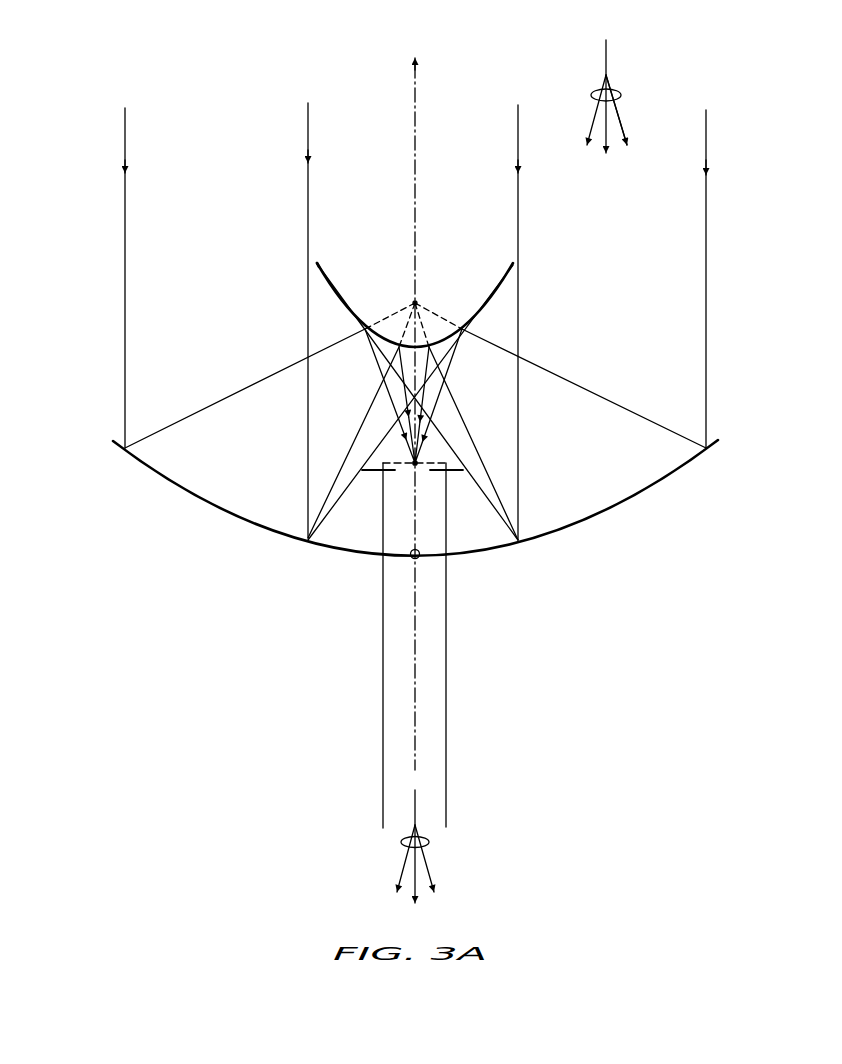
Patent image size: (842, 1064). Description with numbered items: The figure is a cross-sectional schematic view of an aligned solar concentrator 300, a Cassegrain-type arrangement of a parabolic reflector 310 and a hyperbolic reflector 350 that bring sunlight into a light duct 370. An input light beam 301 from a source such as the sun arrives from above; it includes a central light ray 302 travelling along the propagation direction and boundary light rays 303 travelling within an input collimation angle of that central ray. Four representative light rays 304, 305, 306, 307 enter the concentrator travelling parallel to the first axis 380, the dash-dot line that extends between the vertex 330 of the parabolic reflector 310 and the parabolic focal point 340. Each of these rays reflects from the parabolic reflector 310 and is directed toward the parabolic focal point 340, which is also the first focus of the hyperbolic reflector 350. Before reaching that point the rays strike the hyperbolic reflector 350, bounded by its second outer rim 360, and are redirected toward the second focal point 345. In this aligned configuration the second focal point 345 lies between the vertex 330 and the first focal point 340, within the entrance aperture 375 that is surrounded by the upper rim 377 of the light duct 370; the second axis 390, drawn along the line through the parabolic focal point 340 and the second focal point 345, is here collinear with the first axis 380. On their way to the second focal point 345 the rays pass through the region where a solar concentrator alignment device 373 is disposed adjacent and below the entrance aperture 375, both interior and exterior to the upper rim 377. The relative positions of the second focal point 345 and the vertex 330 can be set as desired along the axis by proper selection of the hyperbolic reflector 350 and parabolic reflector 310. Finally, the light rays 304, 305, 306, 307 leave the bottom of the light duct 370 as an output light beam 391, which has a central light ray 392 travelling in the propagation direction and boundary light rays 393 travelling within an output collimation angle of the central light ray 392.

The solar concentrator 300 is at (150, 60).
The input light beam 301 is at (613, 88).
The central light ray 302 is at (608, 113).
The boundary light rays 303 is at (622, 118).
The light ray 304 is at (126, 248).
The light ray 305 is at (308, 198).
The light ray 306 is at (519, 203).
The light ray 307 is at (706, 264).
The parabolic reflector 310 is at (683, 468).
The vertex 330 is at (420, 558).
The parabolic focal point 340 is at (418, 300).
The second focal point 345 is at (415, 468).
The hyperbolic reflector 350 is at (338, 297).
The second outer rim 360 is at (318, 265).
The light duct 370 is at (383, 641).
The solar concentrator alignment device 373 is at (437, 473).
The entrance aperture 375 is at (400, 458).
The upper rim 377 is at (445, 458).
The first axis 380 is at (414, 130).
The second axis 390 is at (416, 93).
The output light beam 391 is at (418, 838).
The central light ray 392 is at (420, 857).
The boundary light rays 393 is at (428, 867).